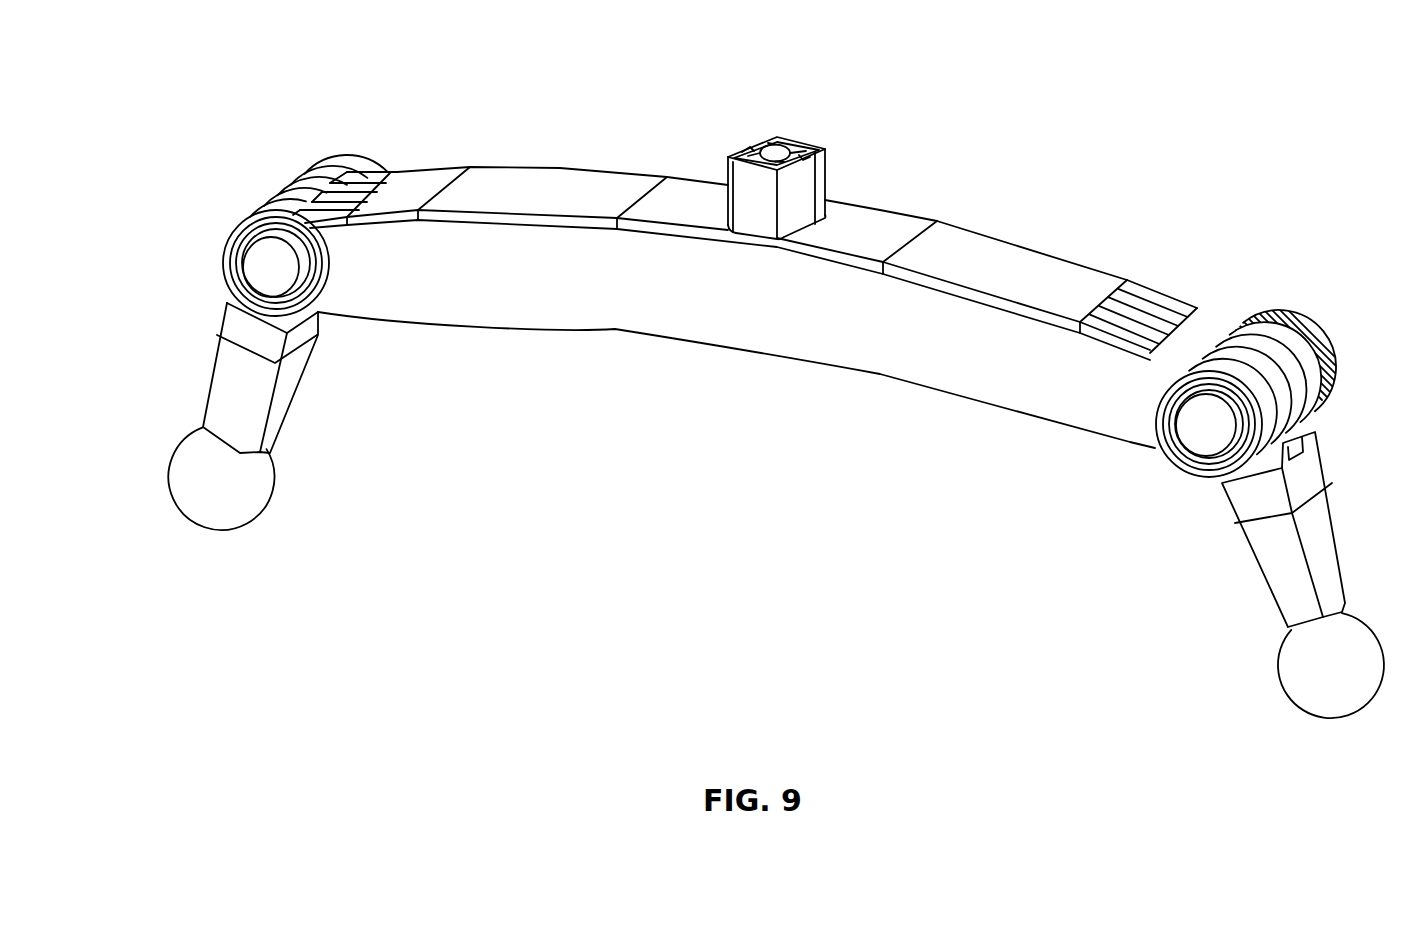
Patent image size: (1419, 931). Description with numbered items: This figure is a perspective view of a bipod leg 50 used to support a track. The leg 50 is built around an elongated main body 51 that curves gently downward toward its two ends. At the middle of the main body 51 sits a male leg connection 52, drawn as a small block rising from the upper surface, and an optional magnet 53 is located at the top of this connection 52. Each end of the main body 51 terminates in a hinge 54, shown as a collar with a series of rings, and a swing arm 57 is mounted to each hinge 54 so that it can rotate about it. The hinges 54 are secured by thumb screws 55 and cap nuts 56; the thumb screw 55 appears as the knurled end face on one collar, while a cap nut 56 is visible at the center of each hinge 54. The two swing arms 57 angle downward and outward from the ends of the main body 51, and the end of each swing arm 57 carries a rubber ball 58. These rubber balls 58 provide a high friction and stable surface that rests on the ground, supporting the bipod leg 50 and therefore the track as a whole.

The bipod leg 50 is at (993, 235).
The main body 51 is at (498, 182).
The male leg connection 52 is at (815, 183).
The magnet 53 is at (773, 153).
The hinge 54 is at (300, 193).
The thumb screw 55 is at (1306, 315).
The cap nut 56 is at (276, 265).
The swing arm 57 is at (228, 372).
The rubber ball 58 is at (202, 500).